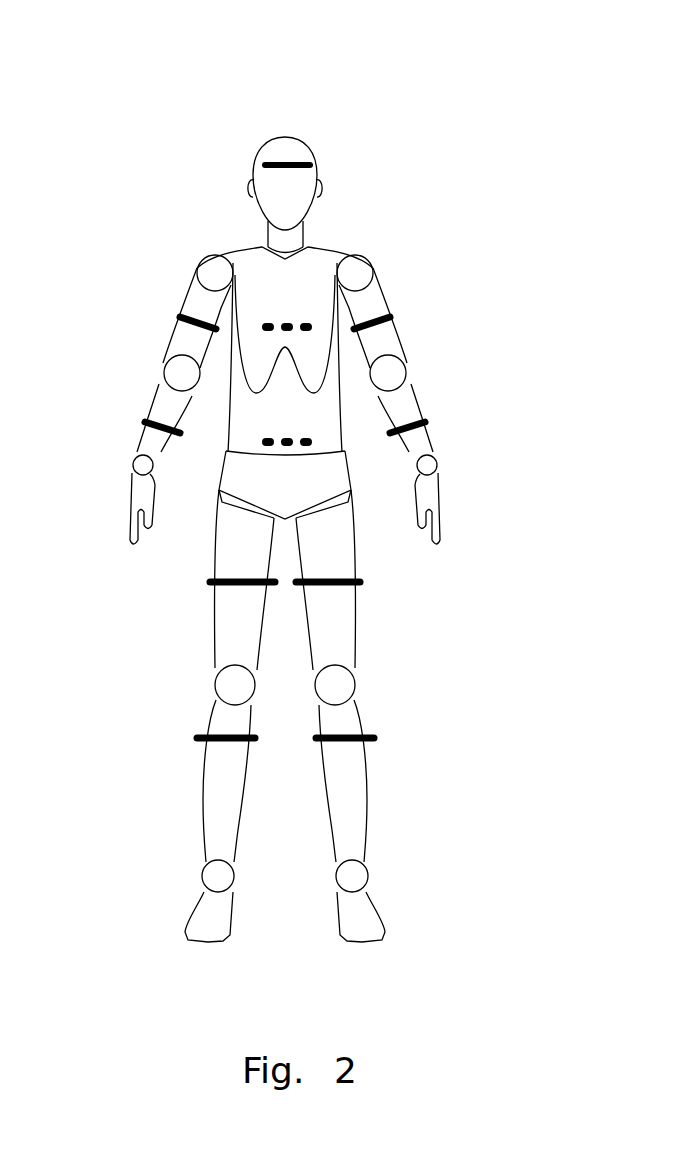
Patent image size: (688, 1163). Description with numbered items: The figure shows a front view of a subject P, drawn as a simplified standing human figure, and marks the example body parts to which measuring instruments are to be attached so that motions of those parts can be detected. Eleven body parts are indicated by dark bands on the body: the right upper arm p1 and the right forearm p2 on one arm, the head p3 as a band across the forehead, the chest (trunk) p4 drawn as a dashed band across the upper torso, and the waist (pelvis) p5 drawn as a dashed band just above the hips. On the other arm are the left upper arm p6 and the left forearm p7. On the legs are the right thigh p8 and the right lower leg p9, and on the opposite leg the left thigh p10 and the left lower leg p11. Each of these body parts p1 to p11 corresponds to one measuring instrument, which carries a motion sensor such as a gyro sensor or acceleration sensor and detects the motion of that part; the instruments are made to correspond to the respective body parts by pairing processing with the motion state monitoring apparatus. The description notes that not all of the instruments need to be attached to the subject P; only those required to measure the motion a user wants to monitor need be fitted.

The subject P is at (338, 95).
The right upper arm p1 is at (180, 317).
The right forearm p2 is at (145, 422).
The head p3 is at (315, 162).
The chest (trunk) p4 is at (292, 321).
The waist (pelvis) p5 is at (300, 438).
The left upper arm p6 is at (392, 318).
The left forearm p7 is at (430, 422).
The right thigh p8 is at (208, 582).
The right lower leg p9 is at (195, 738).
The left thigh p10 is at (363, 582).
The left lower leg p11 is at (377, 738).